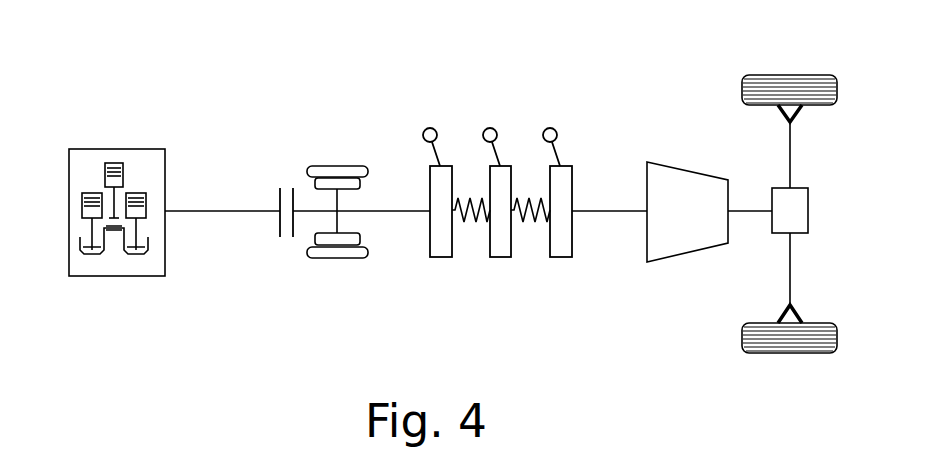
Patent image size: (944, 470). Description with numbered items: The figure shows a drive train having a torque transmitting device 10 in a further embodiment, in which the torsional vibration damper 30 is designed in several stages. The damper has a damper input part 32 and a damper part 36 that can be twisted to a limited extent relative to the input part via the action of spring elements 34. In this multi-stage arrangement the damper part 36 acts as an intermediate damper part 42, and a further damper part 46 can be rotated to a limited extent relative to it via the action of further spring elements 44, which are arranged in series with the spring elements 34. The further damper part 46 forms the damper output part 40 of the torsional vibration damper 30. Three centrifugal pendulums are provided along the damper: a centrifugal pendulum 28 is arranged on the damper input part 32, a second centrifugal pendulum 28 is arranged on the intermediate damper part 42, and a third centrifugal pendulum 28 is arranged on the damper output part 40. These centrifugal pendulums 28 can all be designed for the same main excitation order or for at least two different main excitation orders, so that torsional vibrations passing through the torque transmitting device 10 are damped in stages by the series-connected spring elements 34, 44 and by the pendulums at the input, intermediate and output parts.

The torque transmitting device 10 is at (500, 89).
The centrifugal pendulum 28 is at (422, 148).
The torsional vibration damper 30 is at (514, 117).
The damper input part 32 is at (438, 245).
The spring elements 34 is at (468, 221).
The damper part 36 is at (505, 177).
The damper output part 40 is at (566, 226).
The intermediate damper part 42 is at (494, 247).
The further spring elements 44 is at (523, 223).
The further damper part 46 is at (556, 248).